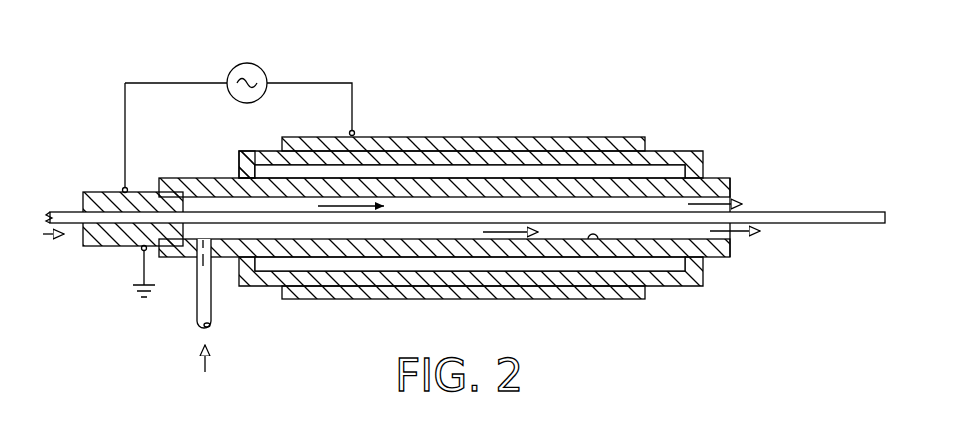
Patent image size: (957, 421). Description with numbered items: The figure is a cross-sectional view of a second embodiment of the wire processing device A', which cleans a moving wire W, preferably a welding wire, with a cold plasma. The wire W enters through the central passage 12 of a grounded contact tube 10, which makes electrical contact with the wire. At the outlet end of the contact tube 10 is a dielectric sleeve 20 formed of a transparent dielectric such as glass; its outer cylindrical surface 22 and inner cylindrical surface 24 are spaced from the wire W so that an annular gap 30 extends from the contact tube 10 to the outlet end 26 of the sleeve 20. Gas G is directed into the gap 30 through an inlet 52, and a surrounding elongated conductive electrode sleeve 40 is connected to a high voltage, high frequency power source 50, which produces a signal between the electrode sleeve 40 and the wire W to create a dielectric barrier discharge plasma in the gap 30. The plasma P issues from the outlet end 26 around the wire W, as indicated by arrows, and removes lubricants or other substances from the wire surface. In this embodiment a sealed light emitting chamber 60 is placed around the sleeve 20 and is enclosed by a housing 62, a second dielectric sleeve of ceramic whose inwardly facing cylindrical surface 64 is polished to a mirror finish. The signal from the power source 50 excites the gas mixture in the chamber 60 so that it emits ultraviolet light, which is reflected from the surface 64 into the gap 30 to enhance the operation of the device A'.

The contact tube 10 is at (464, 195).
The central passage 12 is at (120, 214).
The dielectric sleeve 20 is at (475, 164).
The outer cylindrical surface 22 is at (660, 178).
The inner cylindrical surface 24 is at (593, 240).
The outlet end 26 is at (733, 186).
The annular gap 30 is at (347, 231).
The conductive electrode sleeve 40 is at (592, 130).
The power source 50 is at (250, 62).
The inlet 52 is at (211, 307).
The light emitting chamber 60 is at (486, 172).
The housing 62 is at (262, 148).
The inwardly facing cylindrical surface 64 is at (403, 165).
The wire W is at (818, 212).
The plasma P is at (753, 234).
The gas G is at (205, 359).
The device A' is at (497, 68).